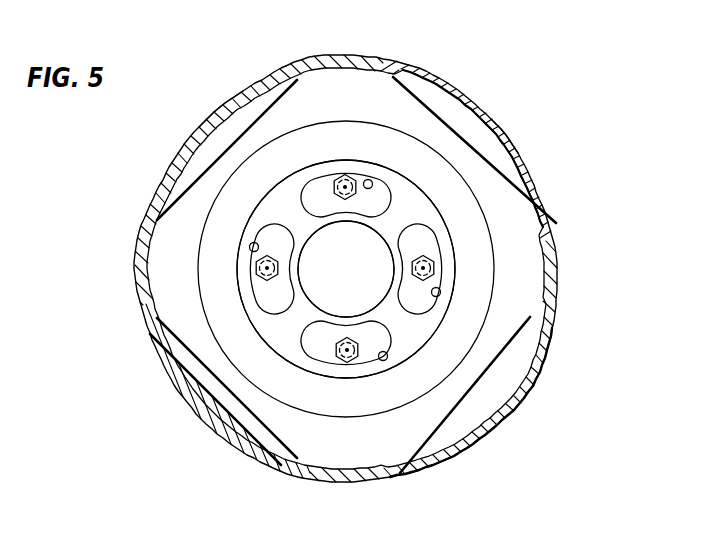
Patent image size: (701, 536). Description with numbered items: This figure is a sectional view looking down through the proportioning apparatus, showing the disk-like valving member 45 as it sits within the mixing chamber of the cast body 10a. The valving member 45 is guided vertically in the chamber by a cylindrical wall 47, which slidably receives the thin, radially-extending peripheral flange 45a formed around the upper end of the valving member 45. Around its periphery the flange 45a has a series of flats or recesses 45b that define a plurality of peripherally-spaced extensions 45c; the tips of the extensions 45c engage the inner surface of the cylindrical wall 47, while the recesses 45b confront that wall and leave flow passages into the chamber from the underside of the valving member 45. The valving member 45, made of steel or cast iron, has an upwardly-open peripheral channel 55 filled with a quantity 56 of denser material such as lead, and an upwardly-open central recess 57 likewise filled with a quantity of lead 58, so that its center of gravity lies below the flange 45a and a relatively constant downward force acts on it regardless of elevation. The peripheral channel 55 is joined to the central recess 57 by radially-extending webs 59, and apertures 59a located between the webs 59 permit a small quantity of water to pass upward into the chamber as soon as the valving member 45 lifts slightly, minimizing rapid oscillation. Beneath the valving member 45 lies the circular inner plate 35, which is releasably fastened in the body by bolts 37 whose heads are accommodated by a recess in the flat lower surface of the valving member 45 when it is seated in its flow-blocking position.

The cast body 10a is at (513, 140).
The circular inner plate 35 is at (323, 352).
The bolts 37 is at (336, 178).
The valving member 45 is at (514, 250).
The peripheral flange 45a is at (378, 447).
The flats or recesses 45b is at (443, 121).
The extensions 45c is at (349, 66).
The cylindrical wall 47 is at (232, 113).
The peripheral channel 55 is at (489, 292).
The quantity of denser material 56 is at (254, 366).
The central recess 57 is at (320, 300).
The quantity of lead 58 is at (360, 254).
The radially-extending webs 59 is at (287, 207).
The apertures 59a is at (367, 179).